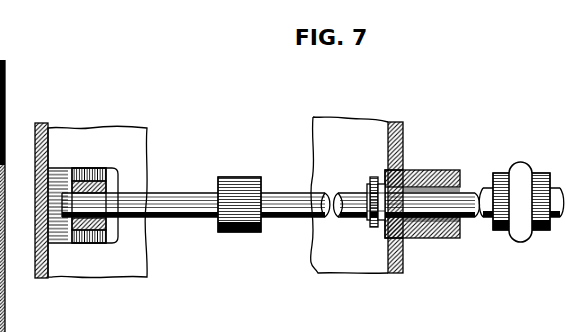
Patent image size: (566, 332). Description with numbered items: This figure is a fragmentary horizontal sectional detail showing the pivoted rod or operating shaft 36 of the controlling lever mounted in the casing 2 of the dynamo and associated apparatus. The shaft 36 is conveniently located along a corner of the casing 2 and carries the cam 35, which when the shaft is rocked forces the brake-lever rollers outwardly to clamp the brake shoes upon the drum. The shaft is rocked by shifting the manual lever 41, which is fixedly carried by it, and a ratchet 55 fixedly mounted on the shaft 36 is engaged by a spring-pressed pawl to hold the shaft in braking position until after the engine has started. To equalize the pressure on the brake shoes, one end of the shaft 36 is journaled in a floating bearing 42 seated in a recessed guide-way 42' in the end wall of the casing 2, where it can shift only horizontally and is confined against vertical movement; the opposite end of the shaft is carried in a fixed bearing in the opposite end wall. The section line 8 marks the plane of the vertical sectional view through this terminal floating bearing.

The casing 2 is at (247, 197).
The floating bearing 42 is at (151, 219).
The recessed portion or guide-way 42' is at (133, 191).
The cam 35 is at (240, 186).
The operating shaft 36 is at (289, 218).
The ratchet 55 is at (375, 232).
The manual lever 41 is at (519, 163).
The section line 8- 8 is at (170, 250).